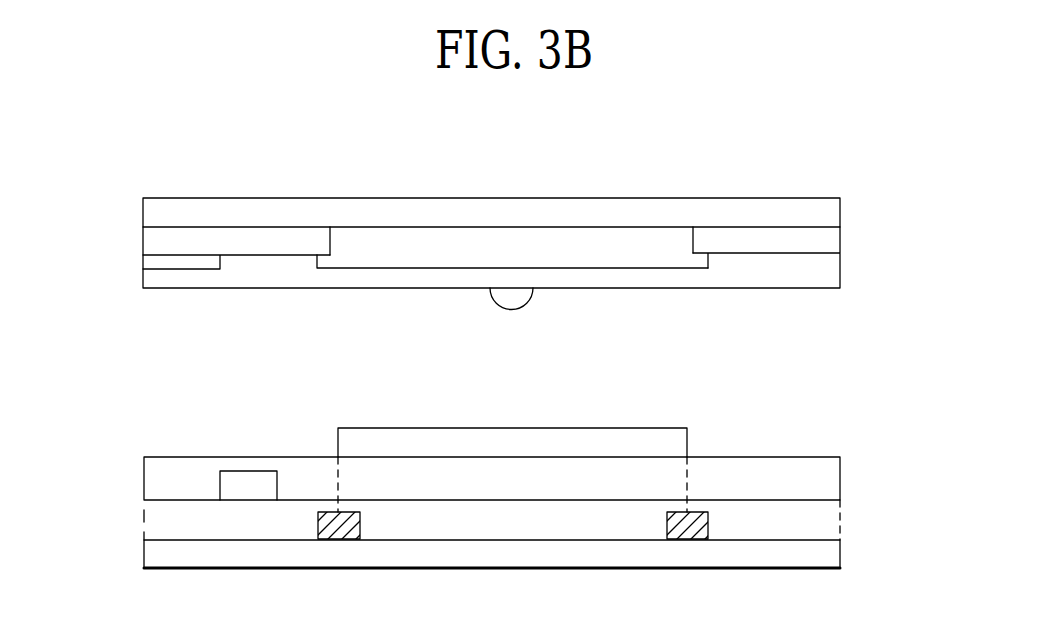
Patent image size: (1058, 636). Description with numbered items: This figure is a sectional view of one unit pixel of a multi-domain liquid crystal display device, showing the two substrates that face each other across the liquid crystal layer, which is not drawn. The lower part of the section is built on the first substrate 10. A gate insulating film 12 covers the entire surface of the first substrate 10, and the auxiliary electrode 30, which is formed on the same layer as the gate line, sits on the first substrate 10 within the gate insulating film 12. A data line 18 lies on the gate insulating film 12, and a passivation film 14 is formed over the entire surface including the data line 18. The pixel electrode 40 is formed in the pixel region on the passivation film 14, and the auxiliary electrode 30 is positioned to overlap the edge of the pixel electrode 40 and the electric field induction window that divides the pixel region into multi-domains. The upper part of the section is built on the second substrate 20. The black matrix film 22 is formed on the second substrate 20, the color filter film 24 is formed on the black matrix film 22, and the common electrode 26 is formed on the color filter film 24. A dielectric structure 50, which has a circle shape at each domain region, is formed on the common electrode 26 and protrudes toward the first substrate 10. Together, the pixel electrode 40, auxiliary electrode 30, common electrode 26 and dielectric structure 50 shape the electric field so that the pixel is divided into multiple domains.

The first substrate 10 is at (835, 552).
The gate insulating film 12 is at (153, 515).
The passivation film 14 is at (835, 484).
The data line 18 is at (252, 480).
The second substrate 20 is at (833, 212).
The black matrix film 22 is at (150, 240).
The color filter film 24 is at (617, 238).
The common electrode 26 is at (833, 269).
The auxiliary electrode 30 is at (340, 535).
The pixel electrode 40 is at (623, 435).
The dielectric structure 50 is at (513, 303).